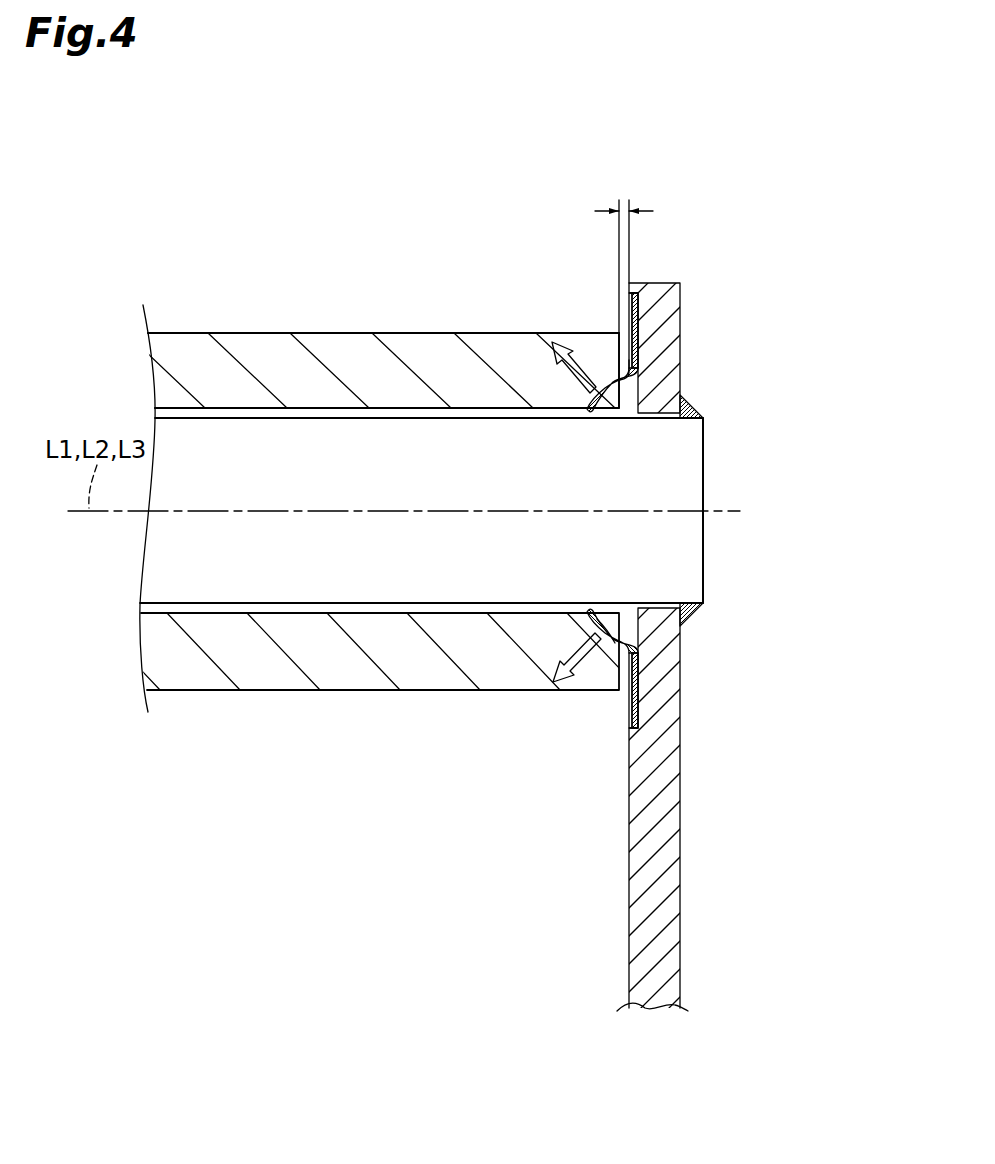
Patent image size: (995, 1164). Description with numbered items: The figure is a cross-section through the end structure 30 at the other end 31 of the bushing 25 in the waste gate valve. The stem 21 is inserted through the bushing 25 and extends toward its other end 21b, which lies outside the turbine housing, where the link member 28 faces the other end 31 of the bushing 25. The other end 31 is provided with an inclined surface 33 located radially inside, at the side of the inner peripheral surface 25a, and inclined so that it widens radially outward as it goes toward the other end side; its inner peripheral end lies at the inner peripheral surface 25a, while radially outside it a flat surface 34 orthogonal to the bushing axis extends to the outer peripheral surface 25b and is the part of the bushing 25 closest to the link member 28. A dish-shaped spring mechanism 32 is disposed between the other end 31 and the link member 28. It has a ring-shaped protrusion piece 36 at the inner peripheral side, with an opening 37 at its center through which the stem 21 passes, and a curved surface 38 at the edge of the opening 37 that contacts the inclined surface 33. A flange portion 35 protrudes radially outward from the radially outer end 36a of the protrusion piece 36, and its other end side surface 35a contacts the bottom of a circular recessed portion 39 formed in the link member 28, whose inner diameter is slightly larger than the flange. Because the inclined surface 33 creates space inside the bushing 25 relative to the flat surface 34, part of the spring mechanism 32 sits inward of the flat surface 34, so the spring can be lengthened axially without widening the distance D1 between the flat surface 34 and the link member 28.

The stem 21 is at (706, 546).
The other end of the stem 21b is at (690, 473).
The bushing 25 is at (200, 348).
The inner peripheral surface of the bushing 25a is at (316, 408).
The outer peripheral surface of the bushing 25b is at (405, 332).
The link member 28 is at (672, 848).
The end structure 30 is at (389, 165).
The other end of the bushing 31 is at (601, 305).
The spring mechanism 32 is at (633, 632).
The inclined surface 33 is at (582, 408).
The flat surface 34 is at (634, 673).
The flange portion 35 is at (640, 318).
The other end side surface of the flange portion 35a is at (652, 350).
The protrusion piece 36 is at (606, 384).
The radially outer end of the protrusion piece 36a is at (637, 377).
The opening 37 is at (590, 610).
The curved surface 38 is at (601, 660).
The recessed portion 39 is at (637, 603).
The distance D1 is at (624, 250).